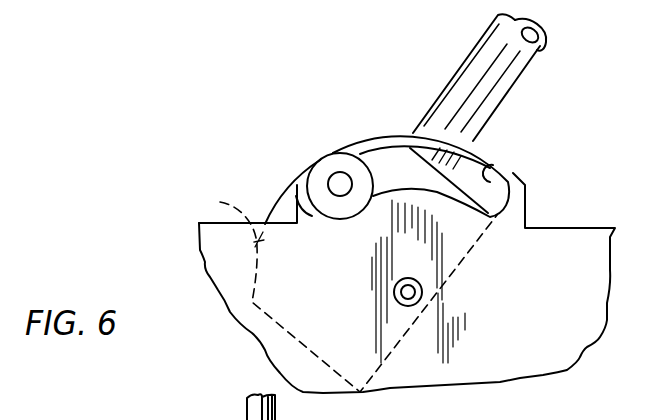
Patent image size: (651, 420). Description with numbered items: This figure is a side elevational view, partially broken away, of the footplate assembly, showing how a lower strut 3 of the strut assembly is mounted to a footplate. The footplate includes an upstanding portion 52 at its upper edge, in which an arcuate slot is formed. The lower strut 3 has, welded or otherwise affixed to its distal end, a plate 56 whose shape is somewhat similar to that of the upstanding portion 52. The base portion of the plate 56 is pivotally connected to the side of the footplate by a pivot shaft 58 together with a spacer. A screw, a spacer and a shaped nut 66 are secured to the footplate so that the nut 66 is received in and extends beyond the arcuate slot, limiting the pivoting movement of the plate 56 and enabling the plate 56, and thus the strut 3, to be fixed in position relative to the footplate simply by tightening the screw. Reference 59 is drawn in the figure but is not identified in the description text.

The lower strut 3 is at (460, 77).
The upstanding portion 52 is at (296, 186).
The plate 56 is at (257, 247).
The pivot shaft 58 is at (416, 302).
The arcuate arm 59 is at (503, 182).
The shaped nut 66 is at (331, 160).